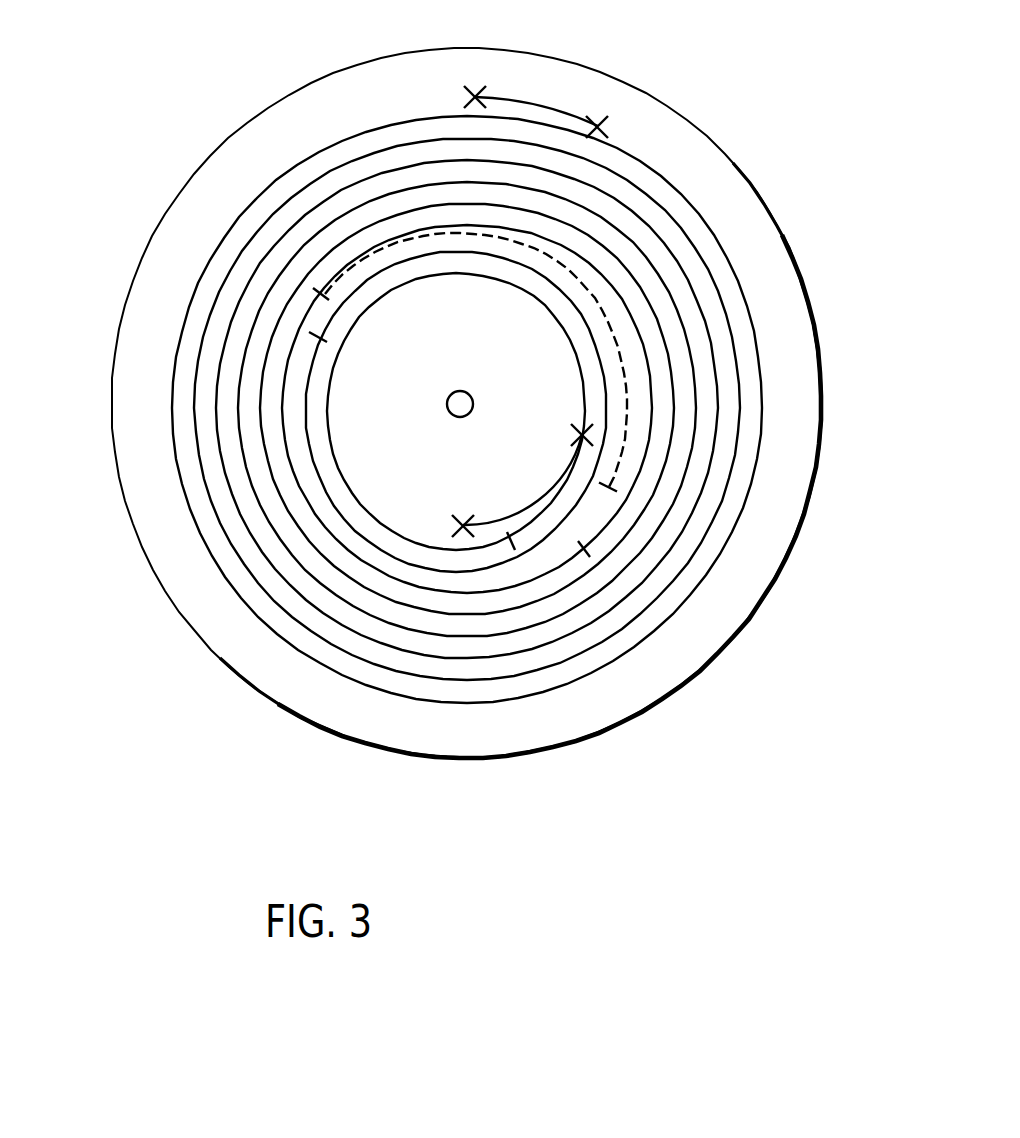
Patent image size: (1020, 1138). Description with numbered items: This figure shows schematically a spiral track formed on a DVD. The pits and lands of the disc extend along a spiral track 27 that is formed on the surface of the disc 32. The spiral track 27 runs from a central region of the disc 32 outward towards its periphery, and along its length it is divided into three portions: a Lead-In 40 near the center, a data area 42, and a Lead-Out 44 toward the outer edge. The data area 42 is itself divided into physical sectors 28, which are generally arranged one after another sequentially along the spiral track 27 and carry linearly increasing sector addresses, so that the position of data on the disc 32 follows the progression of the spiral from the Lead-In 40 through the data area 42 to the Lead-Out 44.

The spiral track 27 is at (314, 660).
The physical sectors 28 is at (620, 464).
The disc 32 is at (778, 227).
The Lead-In 40 is at (511, 522).
The data area 42 is at (609, 590).
The Lead-Out 44 is at (536, 103).